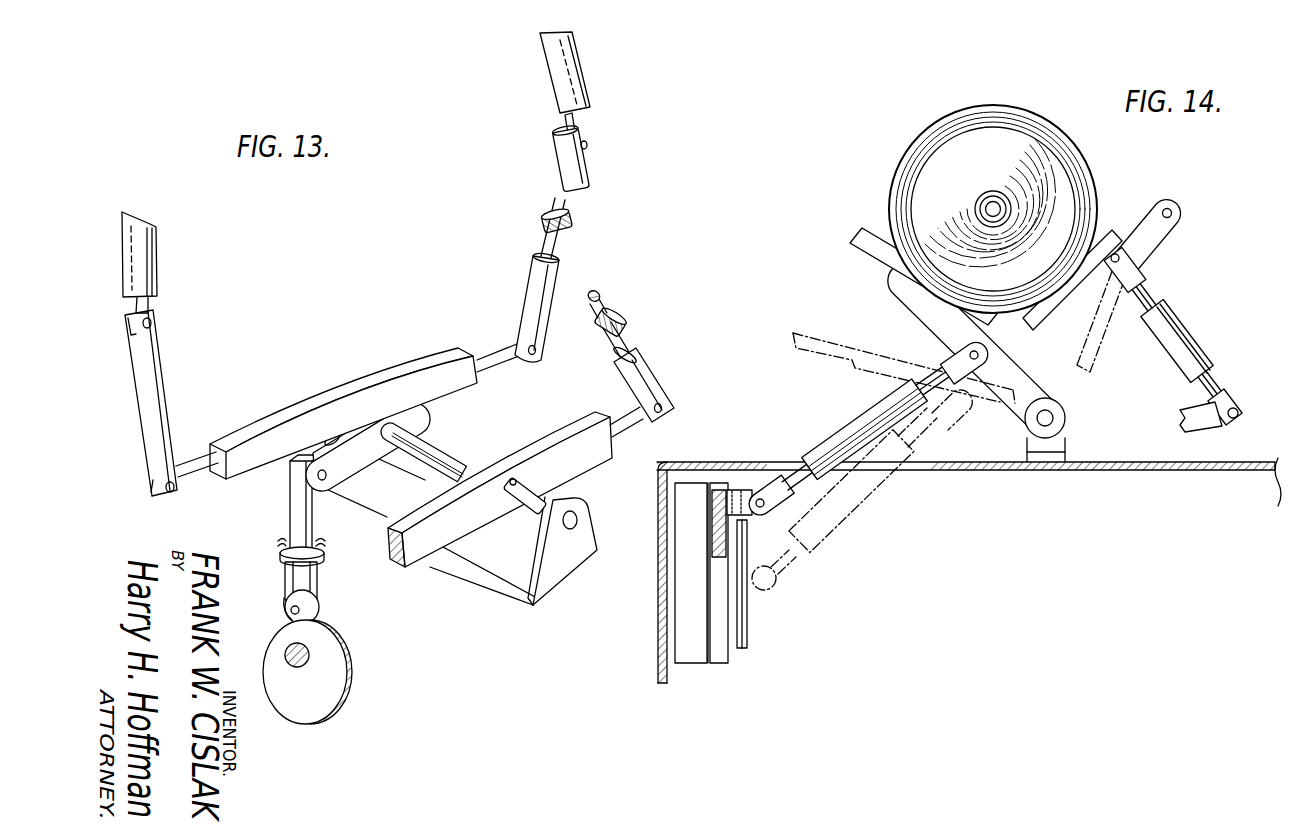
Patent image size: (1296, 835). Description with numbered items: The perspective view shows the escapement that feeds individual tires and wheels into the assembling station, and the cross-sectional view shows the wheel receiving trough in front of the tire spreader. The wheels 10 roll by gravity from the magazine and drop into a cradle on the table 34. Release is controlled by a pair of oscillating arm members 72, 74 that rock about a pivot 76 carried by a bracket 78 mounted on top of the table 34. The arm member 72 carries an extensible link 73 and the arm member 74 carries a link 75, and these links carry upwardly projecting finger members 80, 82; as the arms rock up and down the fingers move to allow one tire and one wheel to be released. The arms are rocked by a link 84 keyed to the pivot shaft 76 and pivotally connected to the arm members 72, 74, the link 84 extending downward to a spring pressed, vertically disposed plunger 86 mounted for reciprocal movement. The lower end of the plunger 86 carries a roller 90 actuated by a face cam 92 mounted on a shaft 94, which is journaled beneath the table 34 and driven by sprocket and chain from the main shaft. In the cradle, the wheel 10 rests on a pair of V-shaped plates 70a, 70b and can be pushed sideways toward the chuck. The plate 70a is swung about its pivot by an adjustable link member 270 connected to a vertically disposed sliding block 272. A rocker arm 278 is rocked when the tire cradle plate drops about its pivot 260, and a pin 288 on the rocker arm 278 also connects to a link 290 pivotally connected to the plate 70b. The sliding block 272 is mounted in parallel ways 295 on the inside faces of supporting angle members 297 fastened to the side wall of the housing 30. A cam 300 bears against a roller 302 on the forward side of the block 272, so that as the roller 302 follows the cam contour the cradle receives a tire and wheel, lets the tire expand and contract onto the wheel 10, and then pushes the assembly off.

In FIG. 14, the wheel 10 is at (906, 154).
In FIG. 14, the housing 30 is at (657, 648).
In FIG. 14, the table 34 is at (723, 459).
In FIG. 14, the V-shaped plate 70a is at (880, 259).
In FIG. 14, the V-shaped plate 70b is at (1080, 363).
In FIG. 13, the oscillating arm member 72 is at (556, 432).
In FIG. 13, the extensible link 73 is at (565, 262).
In FIG. 13, the oscillating arm member 74 is at (416, 362).
In FIG. 13, the link 75 is at (155, 385).
In FIG. 13, the pivot shaft 76 is at (430, 446).
In FIG. 13, the bracket 78 is at (562, 580).
In FIG. 13, the finger member 80 is at (558, 88).
In FIG. 13, the finger member 82 is at (148, 250).
In FIG. 13, the link 84 is at (360, 456).
In FIG. 13, the plunger 86 is at (290, 508).
In FIG. 13, the roller 90 is at (319, 610).
In FIG. 13, the face cam 92 is at (330, 676).
In FIG. 13, the shaft 94 is at (293, 667).
In FIG. 14, the pivot 260 is at (1057, 425).
In FIG. 14, the adjustable link member 270 is at (843, 430).
In FIG. 14, the sliding block 272 is at (712, 541).
In FIG. 14, the rocker arm 278 is at (1190, 421).
In FIG. 14, the pin 288 is at (1240, 410).
In FIG. 14, the link 290 is at (1173, 338).
In FIG. 14, the parallel ways 295 is at (718, 664).
In FIG. 14, the supporting angle members 297 is at (695, 655).
In FIG. 14, the cam 300 is at (738, 633).
In FIG. 14, the roller 302 is at (745, 525).